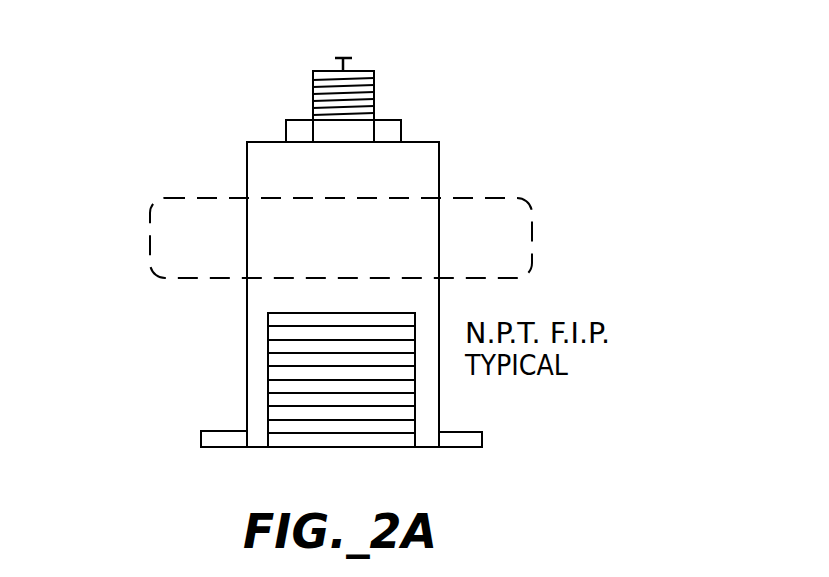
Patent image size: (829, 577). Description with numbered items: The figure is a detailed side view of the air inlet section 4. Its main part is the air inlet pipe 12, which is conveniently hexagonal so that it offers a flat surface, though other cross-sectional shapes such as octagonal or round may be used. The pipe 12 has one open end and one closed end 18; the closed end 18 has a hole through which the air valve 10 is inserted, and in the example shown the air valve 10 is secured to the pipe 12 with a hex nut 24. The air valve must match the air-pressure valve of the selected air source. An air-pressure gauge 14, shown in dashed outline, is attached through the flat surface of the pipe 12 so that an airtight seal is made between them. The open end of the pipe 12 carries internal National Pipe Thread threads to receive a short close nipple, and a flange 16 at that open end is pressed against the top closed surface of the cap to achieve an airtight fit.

The heater assembly 4 is at (128, 128).
The air valve 10 is at (327, 70).
The air inlet pipe 12 is at (246, 300).
The air-pressure gauge 14 is at (528, 210).
The flange 16 is at (201, 433).
The closed end 18 is at (248, 141).
The hex nut 24 is at (384, 120).